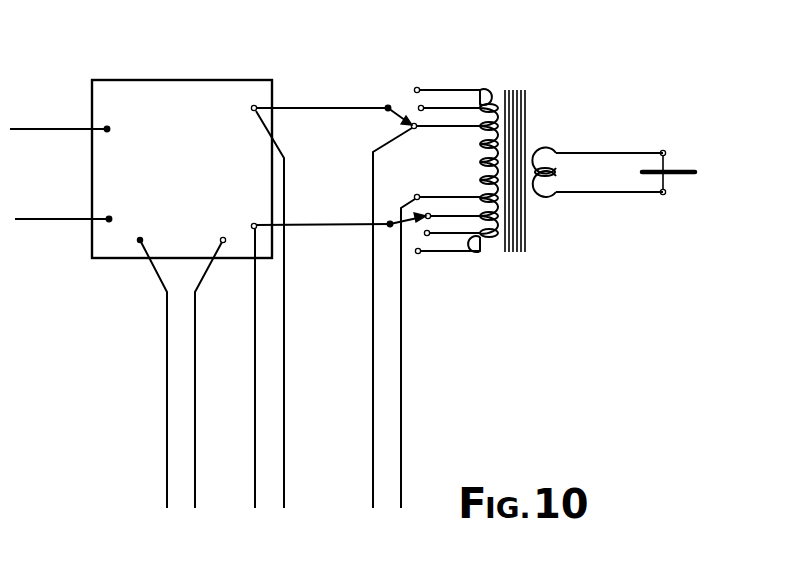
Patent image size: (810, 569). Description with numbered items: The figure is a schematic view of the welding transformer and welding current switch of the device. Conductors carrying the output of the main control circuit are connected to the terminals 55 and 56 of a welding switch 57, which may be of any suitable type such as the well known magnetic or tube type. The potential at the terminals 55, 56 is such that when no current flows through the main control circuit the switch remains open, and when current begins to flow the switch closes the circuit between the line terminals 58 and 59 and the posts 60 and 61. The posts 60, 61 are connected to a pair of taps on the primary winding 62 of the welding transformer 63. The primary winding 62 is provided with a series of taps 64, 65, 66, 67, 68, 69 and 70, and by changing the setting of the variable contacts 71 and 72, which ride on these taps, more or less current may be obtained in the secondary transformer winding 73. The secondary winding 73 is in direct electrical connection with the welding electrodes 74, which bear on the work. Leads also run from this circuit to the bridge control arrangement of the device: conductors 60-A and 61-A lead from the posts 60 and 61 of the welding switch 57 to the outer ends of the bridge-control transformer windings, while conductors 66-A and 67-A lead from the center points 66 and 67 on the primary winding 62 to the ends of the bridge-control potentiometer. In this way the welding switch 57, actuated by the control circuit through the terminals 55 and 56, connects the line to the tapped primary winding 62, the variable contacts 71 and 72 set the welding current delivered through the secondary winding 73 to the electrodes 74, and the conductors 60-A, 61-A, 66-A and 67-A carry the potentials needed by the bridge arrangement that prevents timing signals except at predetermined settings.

The terminal 55 is at (143, 238).
The terminal 56 is at (221, 238).
The welding switch 57 is at (193, 102).
The line terminal 58 is at (110, 128).
The line terminal 59 is at (112, 217).
The post 60 is at (251, 108).
The post 61 is at (253, 223).
The conductor 60-A is at (284, 508).
The conductor 61-A is at (255, 508).
The conductor 66-A is at (373, 508).
The conductor 67-A is at (401, 508).
The primary winding 62 is at (497, 86).
The welding transformer 63 is at (520, 96).
The tap 64 is at (418, 87).
The tap 65 is at (423, 110).
The tap 66 is at (417, 128).
The tap 67 is at (418, 194).
The tap 68 is at (430, 214).
The tap 69 is at (429, 231).
The tap 70 is at (420, 249).
The variable contact 71 is at (404, 118).
The variable contact 72 is at (404, 221).
The secondary transformer winding 73 is at (548, 146).
The welding electrodes 74 is at (682, 200).